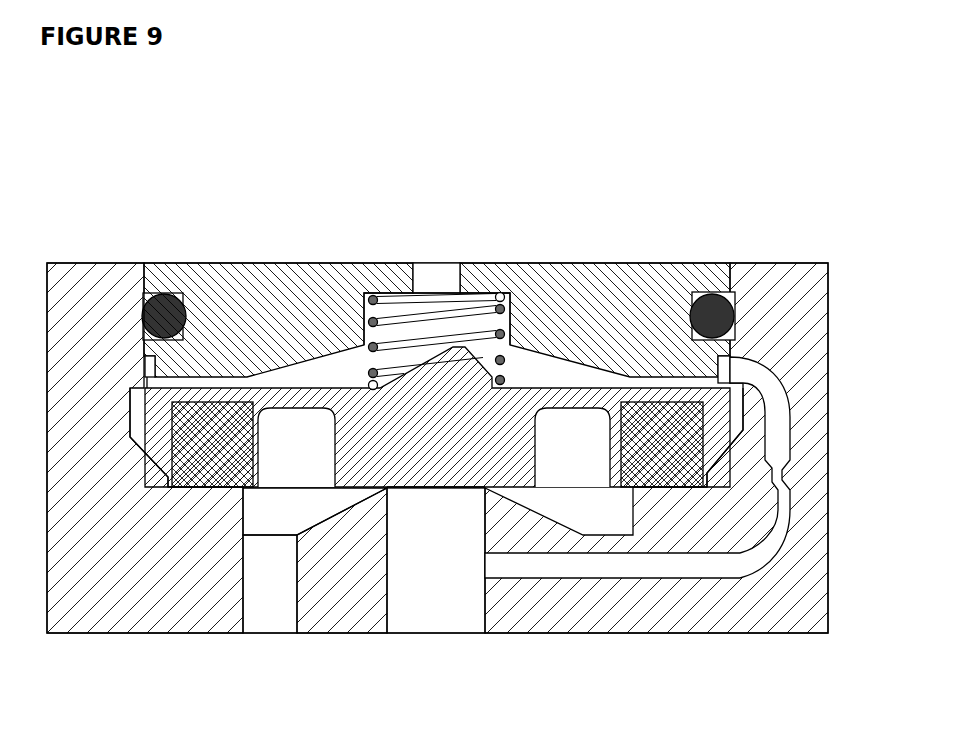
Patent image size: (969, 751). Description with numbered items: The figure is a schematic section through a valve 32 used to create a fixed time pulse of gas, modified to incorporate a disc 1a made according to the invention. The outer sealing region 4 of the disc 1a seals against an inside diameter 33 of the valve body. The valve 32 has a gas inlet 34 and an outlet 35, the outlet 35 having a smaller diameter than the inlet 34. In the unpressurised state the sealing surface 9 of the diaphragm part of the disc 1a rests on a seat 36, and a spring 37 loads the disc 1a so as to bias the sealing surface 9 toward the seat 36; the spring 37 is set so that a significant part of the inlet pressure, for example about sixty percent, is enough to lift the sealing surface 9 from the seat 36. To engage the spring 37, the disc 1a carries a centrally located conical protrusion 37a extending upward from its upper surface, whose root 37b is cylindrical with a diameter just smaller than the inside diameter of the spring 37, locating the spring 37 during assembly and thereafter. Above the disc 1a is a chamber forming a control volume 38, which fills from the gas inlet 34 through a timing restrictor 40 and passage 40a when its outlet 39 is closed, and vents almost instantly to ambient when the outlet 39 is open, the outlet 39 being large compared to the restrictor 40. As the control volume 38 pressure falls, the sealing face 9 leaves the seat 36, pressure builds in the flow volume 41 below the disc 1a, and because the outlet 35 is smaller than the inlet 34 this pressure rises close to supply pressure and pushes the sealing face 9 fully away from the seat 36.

The valve 32 is at (283, 180).
The inside diameter of a valve body 33 is at (145, 355).
The control volume 38 is at (318, 365).
The control volume outlet 39 is at (435, 268).
The conical protrusion 37a is at (413, 368).
The disc 1a is at (445, 432).
The spring 37 is at (475, 310).
The root 37b is at (384, 382).
The outer sealing region 4 is at (135, 405).
The seat 36 is at (386, 489).
The outlet 35 is at (275, 592).
The flow volume 41 is at (275, 505).
The gas inlet 34 is at (440, 592).
The sealing surface 9 is at (463, 488).
The passage 40a is at (730, 567).
The restrictor 40 is at (782, 478).